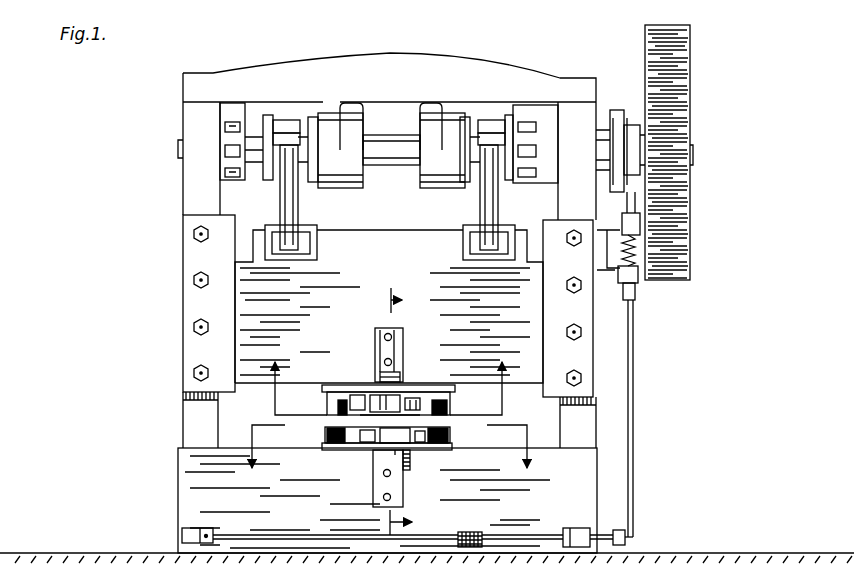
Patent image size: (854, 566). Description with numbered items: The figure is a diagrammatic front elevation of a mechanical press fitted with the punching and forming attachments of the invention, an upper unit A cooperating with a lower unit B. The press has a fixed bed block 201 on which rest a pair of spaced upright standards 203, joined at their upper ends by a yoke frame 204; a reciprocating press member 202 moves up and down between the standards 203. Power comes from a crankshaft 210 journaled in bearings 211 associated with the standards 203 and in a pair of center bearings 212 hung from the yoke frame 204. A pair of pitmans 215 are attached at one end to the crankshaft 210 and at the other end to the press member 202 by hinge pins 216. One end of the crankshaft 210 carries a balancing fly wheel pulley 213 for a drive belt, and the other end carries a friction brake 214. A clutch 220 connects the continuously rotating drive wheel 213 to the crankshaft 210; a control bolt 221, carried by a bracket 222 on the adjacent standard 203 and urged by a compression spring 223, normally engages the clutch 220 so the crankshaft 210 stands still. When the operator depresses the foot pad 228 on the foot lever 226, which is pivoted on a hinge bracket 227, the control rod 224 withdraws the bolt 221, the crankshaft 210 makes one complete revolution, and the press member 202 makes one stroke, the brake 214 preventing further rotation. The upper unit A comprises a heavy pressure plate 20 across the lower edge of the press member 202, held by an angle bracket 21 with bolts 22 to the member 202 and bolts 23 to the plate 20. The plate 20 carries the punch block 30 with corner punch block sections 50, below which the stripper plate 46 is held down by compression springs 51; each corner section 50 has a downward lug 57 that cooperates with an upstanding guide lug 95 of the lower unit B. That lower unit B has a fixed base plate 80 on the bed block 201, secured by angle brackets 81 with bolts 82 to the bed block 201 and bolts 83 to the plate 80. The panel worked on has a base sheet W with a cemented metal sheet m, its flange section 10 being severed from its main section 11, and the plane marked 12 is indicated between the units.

The yoke frame 204 is at (397, 62).
The bearings 211 is at (190, 119).
The upright standards 203 is at (183, 216).
The reciprocating member 202 is at (389, 306).
The friction brake 214 is at (233, 120).
The crankshaft 210 is at (398, 165).
The center bearings 212 is at (343, 188).
The pitmans 215 is at (290, 200).
The hinge pins 216 is at (318, 243).
The clutch 220 is at (633, 141).
The fly wheel pulley 213 is at (678, 52).
The control bolt 221 is at (632, 206).
The compression spring 223 is at (631, 253).
The bracket 222 is at (624, 296).
The control rod 224 is at (634, 405).
The bed block 201 is at (387, 500).
The hinge bracket 227 is at (199, 527).
The foot pad 228 is at (476, 531).
The foot lever 226 is at (546, 536).
The section line 12- 12 is at (413, 411).
The flange section 10 is at (392, 376).
The main section 11 is at (393, 458).
The bolts 22 is at (375, 345).
The angle bracket 21 is at (395, 352).
The bolts 23 is at (403, 362).
The pressure plate 20 is at (335, 386).
The punch block 30 is at (450, 401).
The downward extending lug 57 is at (337, 403).
The compression springs 51 is at (375, 398).
The corner punch block section 50 is at (426, 398).
The upper unit A is at (448, 380).
The base sheet W is at (334, 427).
The stripper plate 46 is at (446, 433).
The guide lug 95 is at (327, 436).
The fixed base plate 80 is at (328, 449).
The angle brackets 81 is at (373, 468).
The bolts 82 is at (384, 497).
The bolts 83 is at (410, 464).
The metal sheet m is at (400, 452).
The lower unit B is at (450, 460).